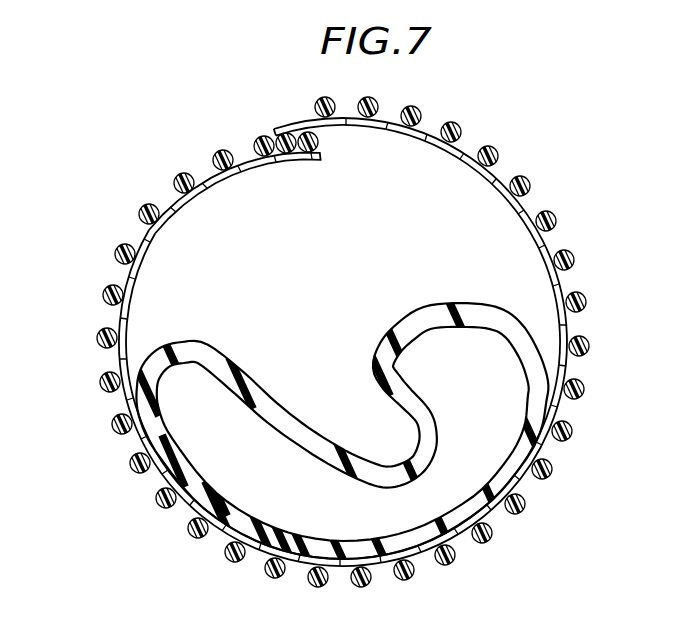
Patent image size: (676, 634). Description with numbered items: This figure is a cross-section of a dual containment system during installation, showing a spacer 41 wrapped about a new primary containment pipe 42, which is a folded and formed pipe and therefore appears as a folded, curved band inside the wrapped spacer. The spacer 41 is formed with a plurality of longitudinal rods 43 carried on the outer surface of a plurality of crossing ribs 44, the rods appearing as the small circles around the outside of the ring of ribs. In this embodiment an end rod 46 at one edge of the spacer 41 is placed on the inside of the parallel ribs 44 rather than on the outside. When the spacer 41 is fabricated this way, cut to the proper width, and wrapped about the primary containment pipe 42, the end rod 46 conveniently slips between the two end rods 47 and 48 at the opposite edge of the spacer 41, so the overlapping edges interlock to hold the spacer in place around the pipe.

The spacer 41 is at (488, 151).
The primary containment pipe 42 is at (540, 401).
The longitudinal rods 43 is at (103, 330).
The crossing ribs 44 is at (117, 367).
The end rod 46 is at (290, 162).
The end rod 47 is at (258, 138).
The end rod 48 is at (322, 140).